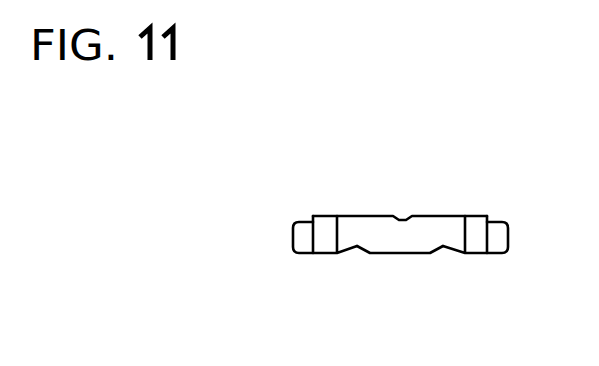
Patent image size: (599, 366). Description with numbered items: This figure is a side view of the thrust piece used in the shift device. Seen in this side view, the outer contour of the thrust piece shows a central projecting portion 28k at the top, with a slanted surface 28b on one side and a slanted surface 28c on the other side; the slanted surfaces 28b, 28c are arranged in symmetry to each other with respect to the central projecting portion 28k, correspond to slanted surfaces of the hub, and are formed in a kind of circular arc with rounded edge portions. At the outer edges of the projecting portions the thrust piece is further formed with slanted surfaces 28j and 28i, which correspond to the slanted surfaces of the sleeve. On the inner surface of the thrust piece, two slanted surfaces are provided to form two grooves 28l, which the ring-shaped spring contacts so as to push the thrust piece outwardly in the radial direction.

The central projecting portion 28k is at (397, 213).
The slanted surface 28b is at (327, 232).
The slanted surface 28c is at (477, 232).
The groove 28l is at (357, 248).
The slanted surface 28j is at (313, 217).
The slanted surface 28i is at (492, 220).